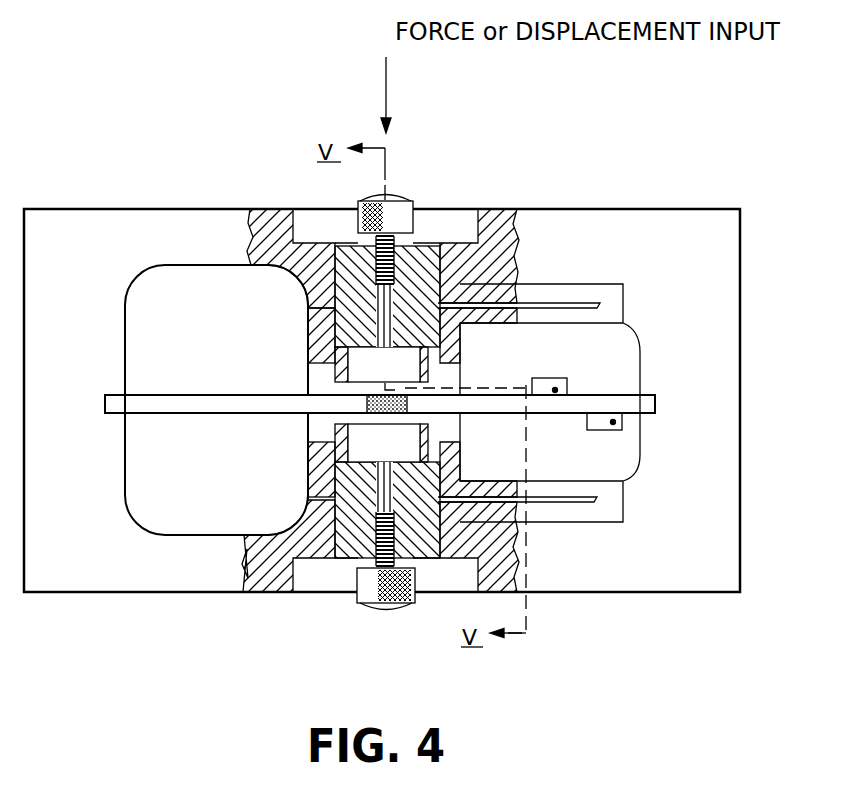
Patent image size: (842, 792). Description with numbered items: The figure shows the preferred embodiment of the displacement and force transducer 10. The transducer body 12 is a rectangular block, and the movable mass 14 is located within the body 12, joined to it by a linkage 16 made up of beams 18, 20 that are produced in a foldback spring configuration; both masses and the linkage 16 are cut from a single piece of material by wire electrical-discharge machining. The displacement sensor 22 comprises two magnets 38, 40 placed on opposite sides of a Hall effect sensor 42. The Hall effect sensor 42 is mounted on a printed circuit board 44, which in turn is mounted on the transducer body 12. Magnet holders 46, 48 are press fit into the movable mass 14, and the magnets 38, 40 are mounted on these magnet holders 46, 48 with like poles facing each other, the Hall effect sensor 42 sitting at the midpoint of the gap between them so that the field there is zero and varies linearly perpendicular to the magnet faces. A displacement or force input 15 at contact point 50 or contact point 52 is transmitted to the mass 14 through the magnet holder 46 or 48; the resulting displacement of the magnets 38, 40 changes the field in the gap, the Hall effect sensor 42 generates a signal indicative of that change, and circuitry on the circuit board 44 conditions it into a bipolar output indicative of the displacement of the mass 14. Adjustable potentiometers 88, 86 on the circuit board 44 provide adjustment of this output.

The displacement and force transducer 10 is at (618, 172).
The transducer body 12 is at (720, 262).
The movable mass 14 is at (445, 388).
The displacement or force input 15 is at (400, 95).
The linkage 16 is at (594, 325).
The beam 18 is at (600, 306).
The beam 20 is at (607, 500).
The displacement sensor 22 is at (288, 368).
The magnet 38 is at (360, 353).
The magnet 40 is at (420, 440).
The Hall effect sensor 42 is at (370, 404).
The printed circuit board 44 is at (198, 405).
The magnet holder 46 is at (347, 262).
The magnet holder 48 is at (345, 545).
The contact point 50 is at (410, 198).
The contact point 52 is at (370, 603).
The adjustable potentiometer 86 is at (548, 380).
The adjustable potentiometer 88 is at (600, 430).